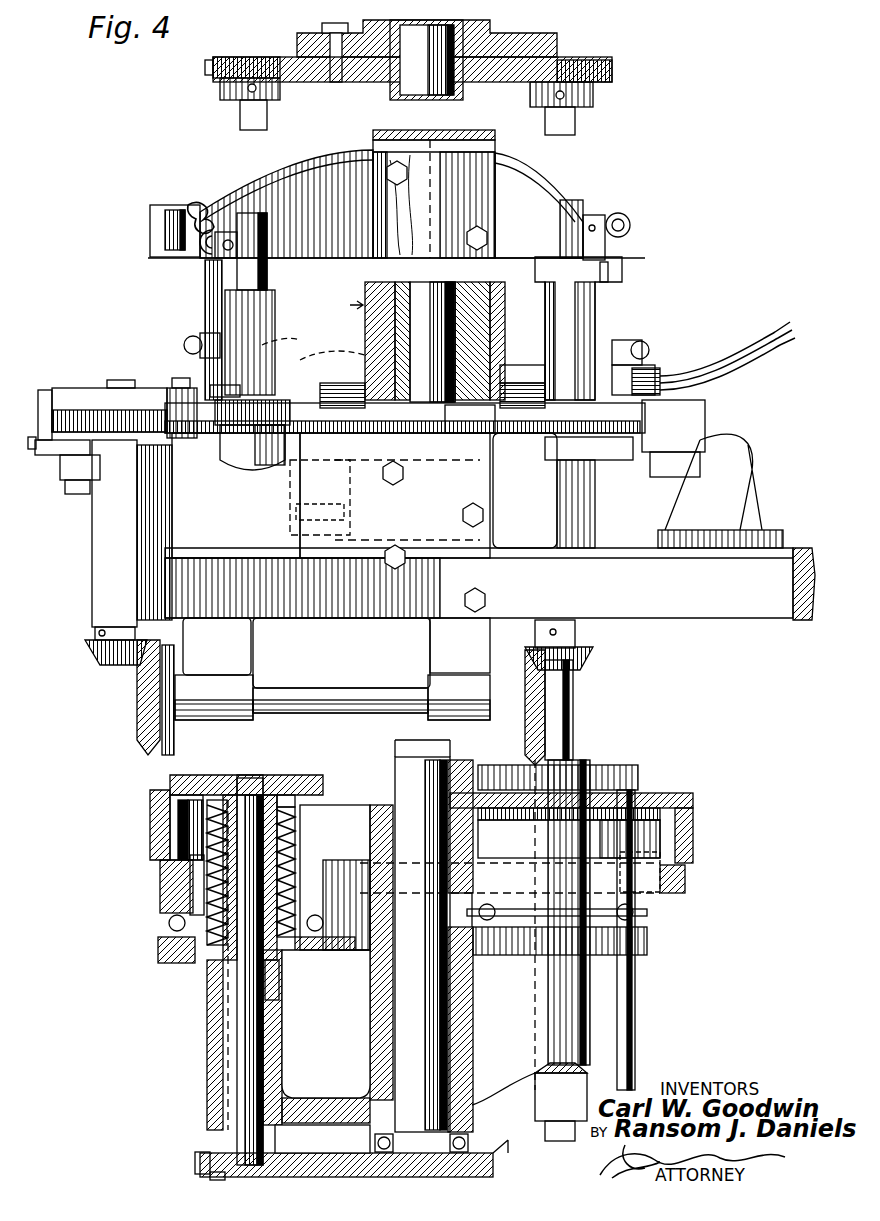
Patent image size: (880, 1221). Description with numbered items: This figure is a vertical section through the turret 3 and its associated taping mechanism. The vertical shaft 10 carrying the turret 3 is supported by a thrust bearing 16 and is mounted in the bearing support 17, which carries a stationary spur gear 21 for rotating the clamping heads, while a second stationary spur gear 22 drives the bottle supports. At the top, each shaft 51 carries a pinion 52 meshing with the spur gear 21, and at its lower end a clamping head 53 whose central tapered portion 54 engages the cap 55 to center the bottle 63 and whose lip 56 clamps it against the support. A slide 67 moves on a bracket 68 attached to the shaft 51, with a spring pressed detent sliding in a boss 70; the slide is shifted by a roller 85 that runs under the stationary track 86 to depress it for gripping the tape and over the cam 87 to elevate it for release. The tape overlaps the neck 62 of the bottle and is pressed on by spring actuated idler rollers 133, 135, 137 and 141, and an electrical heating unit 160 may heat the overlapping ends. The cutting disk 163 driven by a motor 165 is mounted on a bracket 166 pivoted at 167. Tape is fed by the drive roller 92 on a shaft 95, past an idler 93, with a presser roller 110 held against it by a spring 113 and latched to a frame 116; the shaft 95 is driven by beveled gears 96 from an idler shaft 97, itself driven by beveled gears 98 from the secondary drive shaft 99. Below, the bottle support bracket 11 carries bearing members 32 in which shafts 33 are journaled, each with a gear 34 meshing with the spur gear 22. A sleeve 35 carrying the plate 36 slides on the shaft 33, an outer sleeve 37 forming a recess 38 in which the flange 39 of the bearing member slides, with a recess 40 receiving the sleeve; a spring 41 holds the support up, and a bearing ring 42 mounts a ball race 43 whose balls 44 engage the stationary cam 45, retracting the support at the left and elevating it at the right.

The bearing support 17 is at (557, 45).
The stationary spur gear 21 is at (347, 84).
The shaft 51 is at (575, 117).
The pinion 52 is at (612, 73).
The stationary track 86 is at (204, 208).
The cam 87 is at (540, 247).
The roller 85 is at (633, 226).
The slide 67 is at (600, 262).
The bracket 68 is at (545, 275).
The vertical shaft 10 is at (423, 283).
The turret 3 is at (652, 1062).
The boss 70 is at (630, 343).
The cutting disk 163 is at (265, 345).
The clamping head 53 is at (525, 365).
The motor 165 is at (302, 362).
The idler roller 133 is at (405, 400).
The idler roller 137 is at (505, 400).
The lip 56 is at (225, 395).
The electrical heating unit 160 is at (655, 378).
The presser roller 110 is at (52, 395).
The tape drive roller 92 is at (82, 392).
The shaft 95 is at (100, 598).
The idler 93 is at (168, 400).
The idler roller 141 is at (700, 412).
The spring 113 is at (50, 447).
The frame 116 is at (70, 482).
The central tapered portion 54 is at (235, 440).
The cap 55 is at (242, 440).
The neck 62 is at (262, 455).
The bracket 166 is at (292, 505).
The pivot 167 is at (350, 515).
The idler 135 is at (470, 440).
The bottle 63 is at (592, 468).
The beveled gears 96 is at (135, 690).
The idler shaft 97 is at (350, 690).
The beveled gears 98 is at (542, 708).
The secondary drive shaft 99 is at (573, 735).
The sleeve 35 is at (640, 782).
The plate 36 is at (630, 765).
The spring 41 is at (295, 800).
The outer sleeve 37 is at (615, 842).
The stationary cam 45 is at (686, 878).
The recess 38 is at (190, 895).
The balls 44 is at (169, 923).
The bearing ring 42 is at (158, 950).
The flange 39 is at (215, 968).
The ball race 43 is at (323, 928).
The recess 40 is at (280, 990).
The bottle support bracket 11 is at (340, 1042).
The shaft 33 is at (235, 1033).
The bearing member 32 is at (585, 1017).
The gear 34 is at (195, 1158).
The stationary spur gear 22 is at (340, 1160).
The thrust bearing 16 is at (470, 1148).